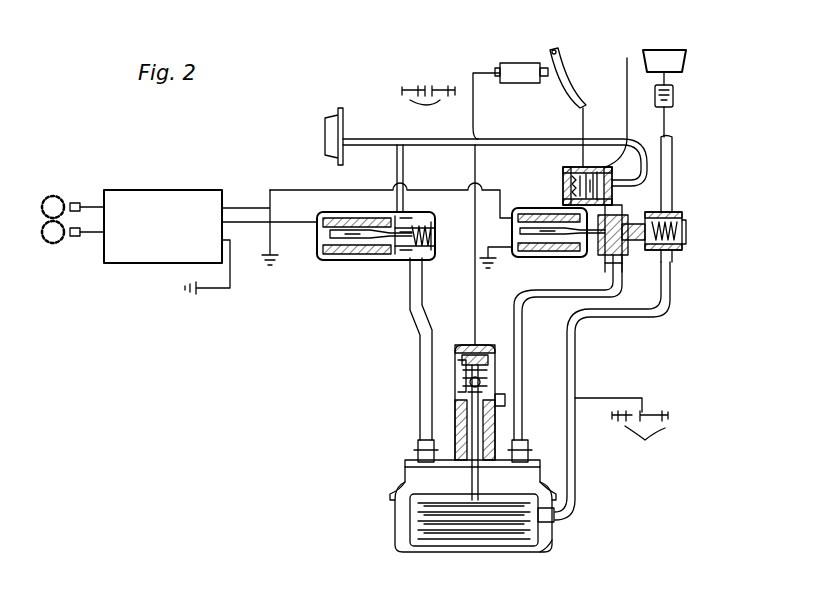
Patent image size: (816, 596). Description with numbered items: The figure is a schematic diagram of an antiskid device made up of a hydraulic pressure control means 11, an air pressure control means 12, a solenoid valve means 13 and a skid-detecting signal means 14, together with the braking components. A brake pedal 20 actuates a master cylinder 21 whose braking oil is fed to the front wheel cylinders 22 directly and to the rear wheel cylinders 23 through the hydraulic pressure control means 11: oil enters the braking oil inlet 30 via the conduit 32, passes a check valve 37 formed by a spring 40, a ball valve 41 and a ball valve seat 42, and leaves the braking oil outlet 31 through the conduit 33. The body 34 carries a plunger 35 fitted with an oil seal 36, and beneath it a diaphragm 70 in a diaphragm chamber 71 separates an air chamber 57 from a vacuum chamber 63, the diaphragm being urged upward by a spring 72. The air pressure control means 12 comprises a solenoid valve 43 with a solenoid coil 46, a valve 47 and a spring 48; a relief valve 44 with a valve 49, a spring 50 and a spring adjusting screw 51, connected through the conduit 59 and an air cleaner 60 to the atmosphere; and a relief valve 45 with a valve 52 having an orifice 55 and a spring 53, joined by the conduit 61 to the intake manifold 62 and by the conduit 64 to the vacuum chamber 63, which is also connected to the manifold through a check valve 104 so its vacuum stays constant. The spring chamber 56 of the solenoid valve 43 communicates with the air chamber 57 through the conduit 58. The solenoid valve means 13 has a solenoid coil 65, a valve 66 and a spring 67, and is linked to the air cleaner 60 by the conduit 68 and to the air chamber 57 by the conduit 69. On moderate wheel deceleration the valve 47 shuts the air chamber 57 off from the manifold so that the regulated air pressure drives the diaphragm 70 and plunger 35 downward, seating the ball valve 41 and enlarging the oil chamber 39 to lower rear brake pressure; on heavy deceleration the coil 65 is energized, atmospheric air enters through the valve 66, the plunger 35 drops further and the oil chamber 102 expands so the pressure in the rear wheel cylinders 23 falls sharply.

The hydraulic pressure control means 11 is at (455, 338).
The air pressure control means 12 is at (514, 175).
The solenoid valve means 13 is at (371, 273).
The skid-detecting signal means 14 is at (158, 190).
The brake pedal 20 is at (586, 100).
The master cylinder 21 is at (500, 70).
The front wheel cylinders 22 is at (418, 104).
The rear wheel cylinders 23 is at (650, 440).
The braking oil inlet 30 is at (476, 345).
The braking oil outlet 31 is at (504, 404).
The conduit 32 is at (475, 112).
The conduit 33 is at (598, 398).
The body 34 is at (456, 370).
The plunger 35 is at (418, 449).
The oil seal 36 is at (528, 449).
The check valve 37 is at (445, 402).
The oil chamber 39 is at (462, 384).
The spring 40 is at (492, 360).
The ball valve 41 is at (494, 375).
The ball valve seat 42 is at (495, 393).
The solenoid valve 43 is at (526, 208).
The relief valve 44 is at (568, 172).
The relief valve 45 is at (686, 224).
The solenoid coil 46 is at (548, 226).
The valve 47 is at (604, 250).
The spring 48 is at (672, 212).
The valve 49 is at (622, 100).
The spring 50 is at (590, 167).
The spring adjusting screw 51 is at (566, 180).
The valve 52 is at (668, 304).
The spring 53 is at (683, 238).
The orifice 55 is at (626, 252).
The spring chamber 56 is at (686, 246).
The air chamber 57 is at (545, 470).
The conduit 58 is at (528, 297).
The conduit 59 is at (438, 139).
The air cleaner 60 is at (330, 108).
The conduit 61 is at (673, 152).
The intake manifold 62 is at (666, 50).
The vacuum chamber 63 is at (410, 538).
The conduit 64 is at (616, 318).
The solenoid coil 65 is at (338, 258).
The valve 66 is at (402, 262).
The spring 67 is at (432, 250).
The conduit 68 is at (404, 163).
The conduit 69 is at (414, 332).
The diaphragm 70 is at (556, 514).
The diaphragm chamber 71 is at (520, 472).
The spring 72 is at (548, 544).
The oil chamber 102 is at (456, 418).
The check valve 104 is at (674, 93).